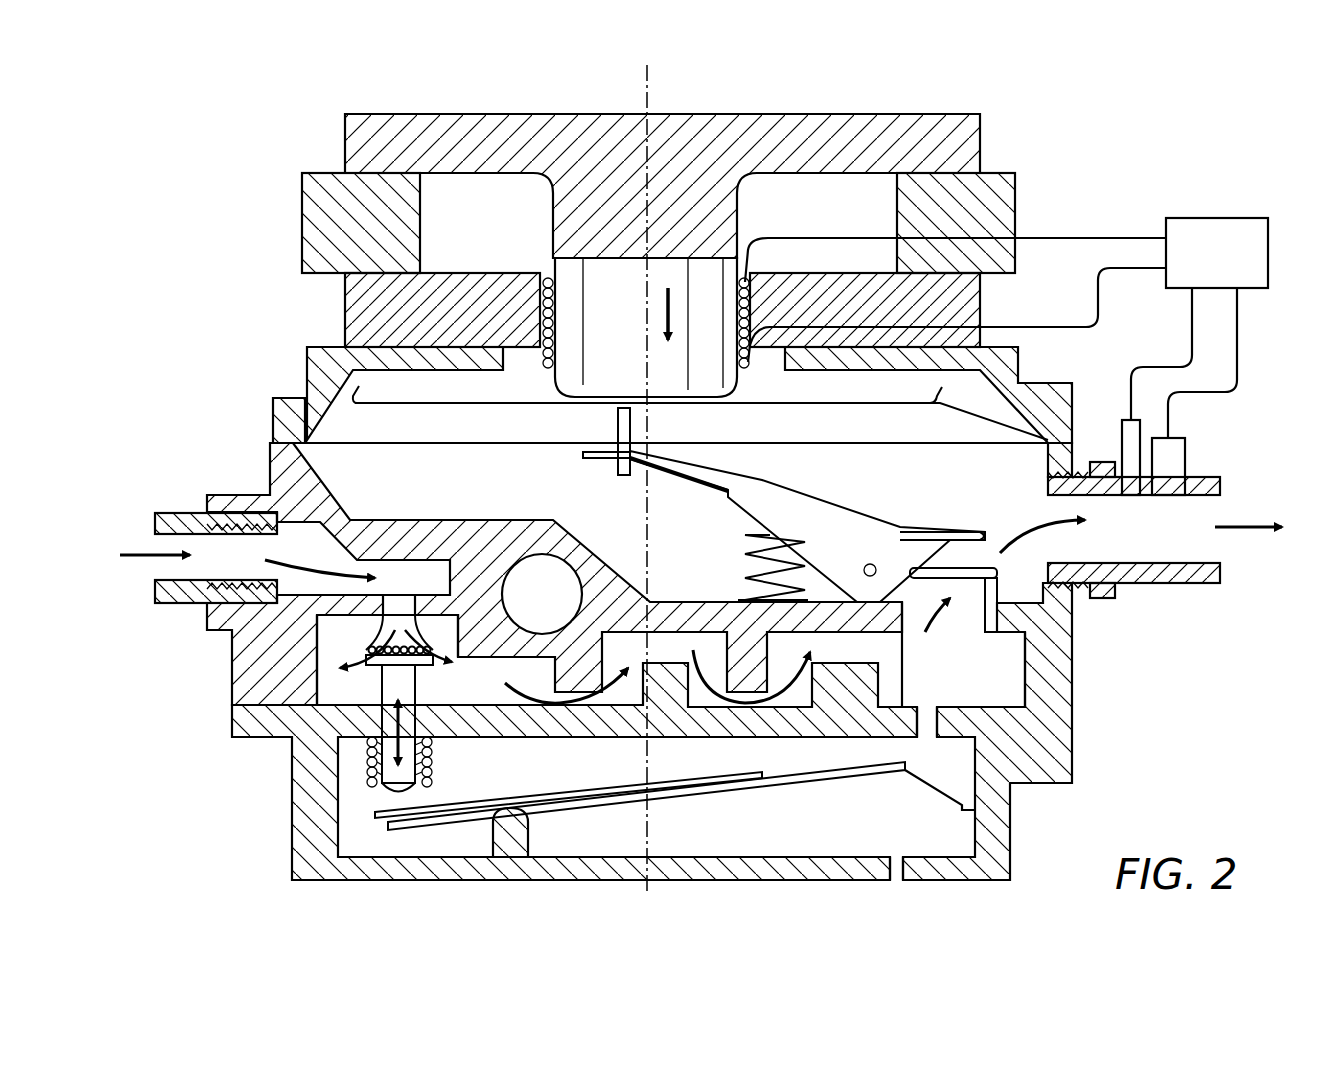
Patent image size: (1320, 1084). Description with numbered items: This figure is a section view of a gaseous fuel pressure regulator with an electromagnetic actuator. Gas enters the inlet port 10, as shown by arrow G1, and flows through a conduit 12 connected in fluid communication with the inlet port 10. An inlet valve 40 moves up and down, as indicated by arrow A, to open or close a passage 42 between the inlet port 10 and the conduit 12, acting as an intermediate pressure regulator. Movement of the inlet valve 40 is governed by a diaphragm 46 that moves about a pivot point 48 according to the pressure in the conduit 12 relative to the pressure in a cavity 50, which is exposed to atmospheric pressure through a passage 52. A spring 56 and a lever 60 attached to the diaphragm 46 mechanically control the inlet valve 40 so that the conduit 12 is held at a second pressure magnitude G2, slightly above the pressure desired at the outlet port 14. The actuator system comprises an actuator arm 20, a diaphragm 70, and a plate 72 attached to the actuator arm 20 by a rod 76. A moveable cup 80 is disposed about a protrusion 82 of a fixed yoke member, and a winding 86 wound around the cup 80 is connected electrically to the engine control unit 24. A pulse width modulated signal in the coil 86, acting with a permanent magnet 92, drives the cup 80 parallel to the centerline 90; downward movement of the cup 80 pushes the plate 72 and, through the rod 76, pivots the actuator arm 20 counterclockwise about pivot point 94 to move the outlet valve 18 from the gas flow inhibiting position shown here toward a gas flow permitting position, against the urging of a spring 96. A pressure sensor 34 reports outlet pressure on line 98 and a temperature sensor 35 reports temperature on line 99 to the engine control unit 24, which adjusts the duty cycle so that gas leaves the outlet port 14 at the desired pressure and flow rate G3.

The inlet port 10 is at (165, 545).
The conduit 12 is at (300, 672).
The outlet port 14 is at (1215, 572).
The outlet valve 18 is at (990, 552).
The actuator arm 20 is at (800, 508).
The engine control unit 24 is at (1213, 218).
The pressure sensor 34 is at (1180, 455).
The temperature sensor 35 is at (1125, 442).
The inlet valve 40 is at (420, 677).
The passage 42 is at (400, 605).
The diaphragm 46 is at (925, 785).
The pivot point 48 is at (527, 825).
The cavity 50 is at (730, 838).
The passage 52 is at (895, 868).
The spring 56 is at (432, 763).
The lever 60 is at (575, 785).
The diaphragm 70 is at (963, 420).
The plate 72 is at (773, 402).
The rod 76 is at (615, 430).
The moveable component 80 is at (570, 270).
The protrusion 82 is at (725, 222).
The winding 86 is at (553, 280).
The centerline 90 is at (650, 75).
The permanent magnet 92 is at (352, 313).
The pivot point 94 is at (870, 562).
The spring 96 is at (735, 585).
The line 98 is at (1240, 362).
The line 99 is at (1190, 342).
The arrow A is at (402, 723).
The inlet gas flow G1 is at (128, 565).
The second pressure magnitude G2 is at (1020, 685).
The outlet gas flow G3 is at (1245, 525).